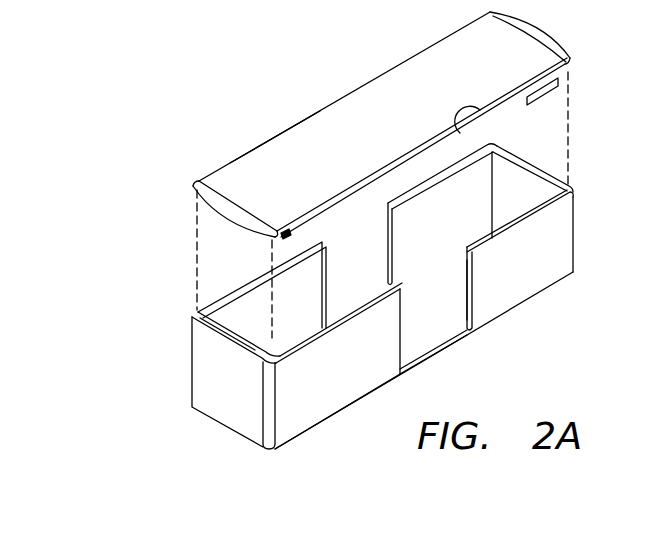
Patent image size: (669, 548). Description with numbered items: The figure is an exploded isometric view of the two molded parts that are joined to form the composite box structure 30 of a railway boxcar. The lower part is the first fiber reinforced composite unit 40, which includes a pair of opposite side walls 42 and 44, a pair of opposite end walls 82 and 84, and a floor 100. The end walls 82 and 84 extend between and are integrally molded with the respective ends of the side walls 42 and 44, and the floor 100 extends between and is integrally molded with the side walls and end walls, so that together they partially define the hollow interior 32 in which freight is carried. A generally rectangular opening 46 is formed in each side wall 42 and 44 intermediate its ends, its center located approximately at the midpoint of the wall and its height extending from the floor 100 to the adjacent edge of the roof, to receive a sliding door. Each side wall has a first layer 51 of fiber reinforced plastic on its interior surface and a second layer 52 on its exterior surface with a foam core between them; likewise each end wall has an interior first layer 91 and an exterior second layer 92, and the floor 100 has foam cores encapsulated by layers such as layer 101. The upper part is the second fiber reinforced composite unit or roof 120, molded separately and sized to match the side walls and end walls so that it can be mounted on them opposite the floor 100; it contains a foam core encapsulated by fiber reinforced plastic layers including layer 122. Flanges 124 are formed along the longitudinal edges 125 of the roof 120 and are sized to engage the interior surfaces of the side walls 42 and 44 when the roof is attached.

The composite box structure 30 is at (605, 234).
The hollow interior 32 is at (436, 198).
The first fiber reinforced composite unit 40 is at (535, 286).
The side wall 42 is at (353, 396).
The side wall 44 is at (242, 306).
The opening 46 is at (388, 250).
The first layer 51 is at (310, 292).
The second layer 52 is at (305, 425).
The end wall 82 is at (560, 163).
The end wall 84 is at (220, 411).
The first layer 91 is at (513, 168).
The second layer 92 is at (205, 385).
The floor 100 is at (442, 348).
The layer 101 is at (425, 339).
The second fiber reinforced composite unit 120 is at (342, 94).
The layer 122 is at (258, 150).
The flange 124 is at (553, 81).
The longitudinal edge 125 is at (480, 110).